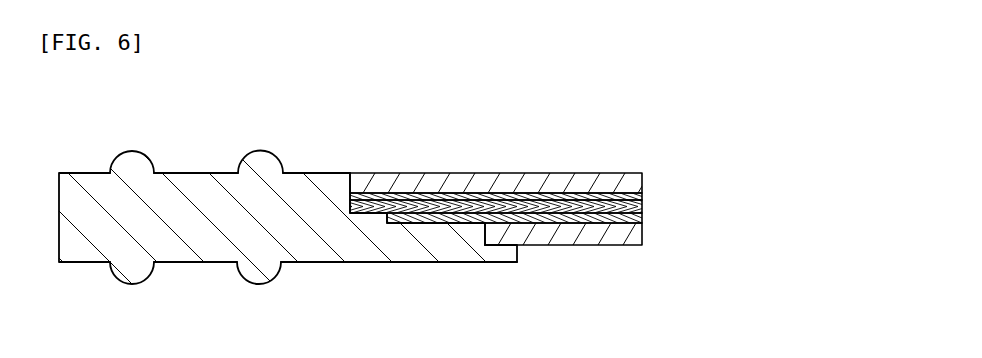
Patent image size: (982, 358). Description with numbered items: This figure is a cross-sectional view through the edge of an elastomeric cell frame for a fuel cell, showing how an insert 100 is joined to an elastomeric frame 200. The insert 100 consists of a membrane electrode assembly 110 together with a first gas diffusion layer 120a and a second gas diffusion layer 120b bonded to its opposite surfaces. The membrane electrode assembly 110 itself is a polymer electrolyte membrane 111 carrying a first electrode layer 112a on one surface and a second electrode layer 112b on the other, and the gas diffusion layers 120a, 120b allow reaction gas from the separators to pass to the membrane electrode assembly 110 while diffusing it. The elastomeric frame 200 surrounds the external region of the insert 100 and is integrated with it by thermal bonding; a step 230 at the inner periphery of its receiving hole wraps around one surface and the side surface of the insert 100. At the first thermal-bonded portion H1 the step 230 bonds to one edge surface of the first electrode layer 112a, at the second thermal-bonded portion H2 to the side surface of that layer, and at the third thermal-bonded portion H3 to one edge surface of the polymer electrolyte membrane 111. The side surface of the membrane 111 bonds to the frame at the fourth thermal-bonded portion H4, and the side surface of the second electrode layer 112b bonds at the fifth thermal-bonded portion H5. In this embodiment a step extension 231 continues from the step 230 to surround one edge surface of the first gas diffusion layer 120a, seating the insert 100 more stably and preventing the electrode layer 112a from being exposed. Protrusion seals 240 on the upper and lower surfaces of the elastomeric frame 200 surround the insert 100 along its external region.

The insert 100 is at (603, 223).
The membrane electrode assembly 110 is at (572, 208).
The polymer electrolyte membrane 111 is at (643, 207).
The first electrode layer 112a is at (643, 218).
The second electrode layer 112b is at (643, 193).
The first gas diffusion layer 120a is at (625, 255).
The second gas diffusion layer 120b is at (615, 182).
The elastomeric frame 200 is at (95, 203).
The step 230 is at (448, 248).
The step extension 231 is at (500, 255).
The protrusion seal 240 is at (140, 280).
The first thermal-bonded portion H1 is at (418, 225).
The second thermal-bonded portion H2 is at (388, 218).
The third thermal-bonded portion H3 is at (370, 215).
The fourth thermal-bonded portion H4 is at (352, 212).
The fifth thermal-bonded portion H5 is at (348, 197).